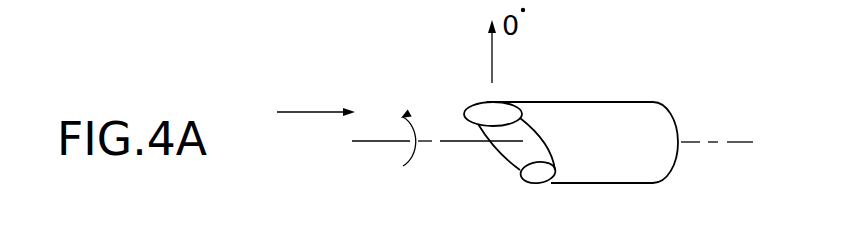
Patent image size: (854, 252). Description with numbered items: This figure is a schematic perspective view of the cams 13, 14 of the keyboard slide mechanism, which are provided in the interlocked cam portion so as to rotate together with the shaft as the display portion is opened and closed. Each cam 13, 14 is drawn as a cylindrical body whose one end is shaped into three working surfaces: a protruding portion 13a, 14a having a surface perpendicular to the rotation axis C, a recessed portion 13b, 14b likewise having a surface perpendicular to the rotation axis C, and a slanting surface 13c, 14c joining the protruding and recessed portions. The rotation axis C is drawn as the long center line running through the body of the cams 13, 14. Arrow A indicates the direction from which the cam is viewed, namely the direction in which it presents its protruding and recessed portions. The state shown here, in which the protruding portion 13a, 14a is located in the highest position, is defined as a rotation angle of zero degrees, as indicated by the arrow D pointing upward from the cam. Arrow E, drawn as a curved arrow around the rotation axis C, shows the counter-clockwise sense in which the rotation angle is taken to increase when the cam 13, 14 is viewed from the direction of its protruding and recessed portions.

The cam 13 is at (620, 111).
The cam 14 is at (643, 118).
The protruding portion 13a is at (557, 86).
The protruding portion 14a is at (488, 117).
The recessed portion 13b is at (584, 199).
The recessed portion 14b is at (538, 178).
The slanting surface 13c is at (473, 163).
The slanting surface 14c is at (521, 150).
The arrow A is at (316, 99).
The rotation axis C is at (368, 142).
The arrow D is at (491, 56).
The arrow E is at (408, 112).